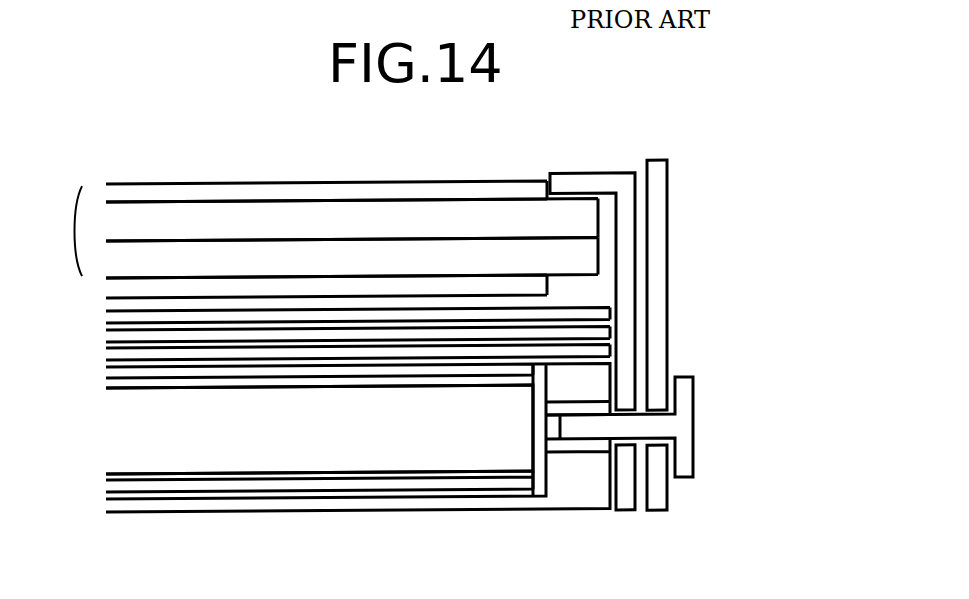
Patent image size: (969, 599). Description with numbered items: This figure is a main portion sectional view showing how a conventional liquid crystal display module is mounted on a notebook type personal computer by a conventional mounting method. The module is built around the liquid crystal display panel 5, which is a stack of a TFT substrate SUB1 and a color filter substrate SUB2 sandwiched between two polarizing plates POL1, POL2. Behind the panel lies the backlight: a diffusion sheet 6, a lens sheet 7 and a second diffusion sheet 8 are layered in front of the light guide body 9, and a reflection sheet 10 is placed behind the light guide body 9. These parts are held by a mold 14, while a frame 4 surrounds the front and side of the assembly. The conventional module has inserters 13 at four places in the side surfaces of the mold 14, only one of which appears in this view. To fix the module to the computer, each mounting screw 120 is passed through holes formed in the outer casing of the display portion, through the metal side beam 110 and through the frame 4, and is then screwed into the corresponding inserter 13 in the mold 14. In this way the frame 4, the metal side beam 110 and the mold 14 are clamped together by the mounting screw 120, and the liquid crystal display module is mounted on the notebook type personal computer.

The liquid crystal display panel 5 is at (61, 231).
The polarizing plate POL2 is at (186, 190).
The color filter substrate SUB2 is at (283, 213).
The TFT substrate SUB1 is at (377, 253).
The polarizing plate POL1 is at (460, 290).
The frame 4 is at (588, 180).
The metal side beam 110 is at (662, 270).
The diffusion sheet 6 is at (109, 321).
The lens sheet 7 is at (110, 355).
The diffusion sheet 8 is at (109, 378).
The light guide body 9 is at (119, 428).
The reflection sheet 10 is at (113, 489).
The mold 14 is at (588, 500).
The inserter 13 is at (592, 406).
The mounting screw 120 is at (688, 425).